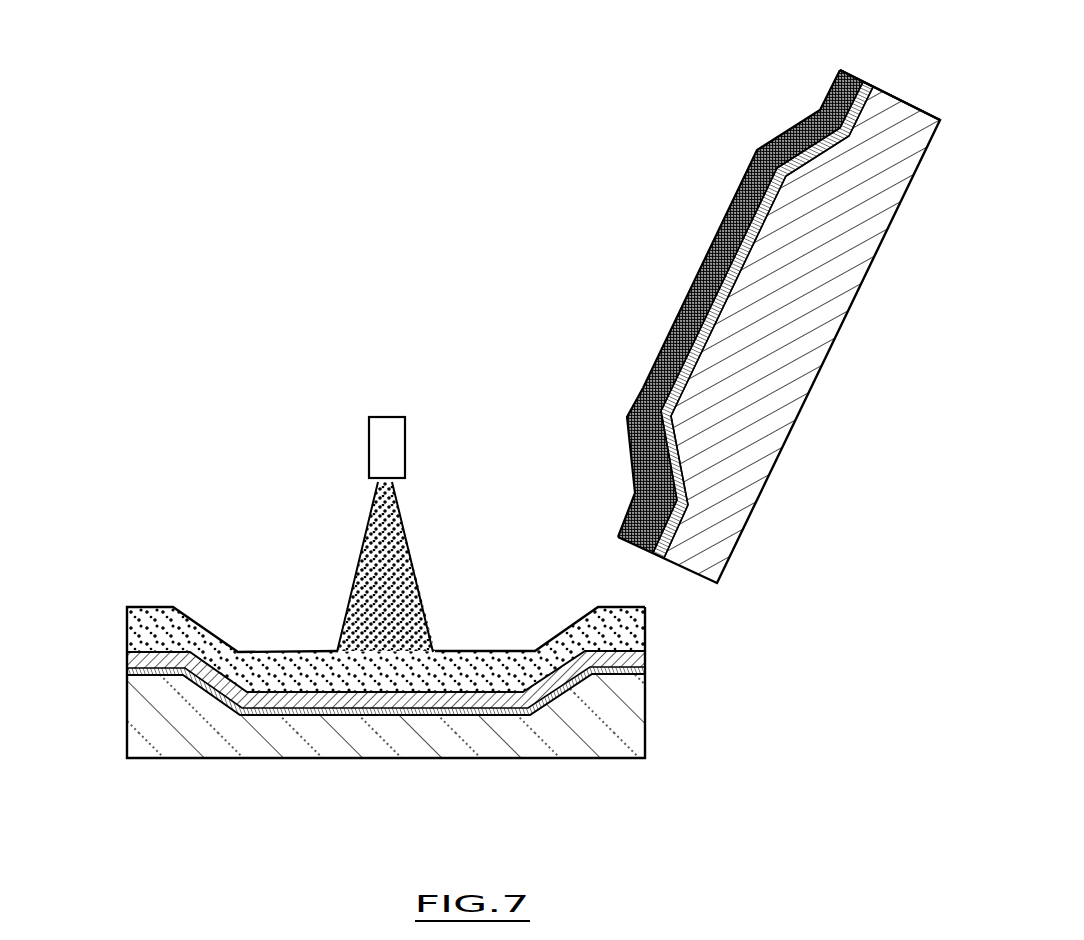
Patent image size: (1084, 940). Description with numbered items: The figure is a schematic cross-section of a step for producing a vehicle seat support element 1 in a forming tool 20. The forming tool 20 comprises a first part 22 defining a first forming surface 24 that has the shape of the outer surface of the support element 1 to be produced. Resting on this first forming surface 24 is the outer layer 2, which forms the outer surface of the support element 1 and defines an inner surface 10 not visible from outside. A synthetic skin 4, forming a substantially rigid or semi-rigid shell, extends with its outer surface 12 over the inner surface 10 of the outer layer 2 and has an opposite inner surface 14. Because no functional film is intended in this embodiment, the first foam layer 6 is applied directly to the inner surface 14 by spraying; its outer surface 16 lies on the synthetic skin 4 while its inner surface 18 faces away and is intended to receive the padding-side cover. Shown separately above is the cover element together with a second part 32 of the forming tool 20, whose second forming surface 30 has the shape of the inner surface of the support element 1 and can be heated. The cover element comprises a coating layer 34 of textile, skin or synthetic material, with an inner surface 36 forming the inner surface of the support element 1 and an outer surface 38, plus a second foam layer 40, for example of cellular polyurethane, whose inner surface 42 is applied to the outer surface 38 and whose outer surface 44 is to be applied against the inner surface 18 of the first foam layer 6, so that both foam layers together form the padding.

The vehicle seat support element 1 is at (707, 272).
The outer layer 2 is at (283, 700).
The synthetic skin 4 is at (265, 712).
The first foam layer 6 is at (257, 655).
The inner surface 10 is at (622, 650).
The outer surface 12 is at (560, 683).
The inner surface 14 is at (527, 668).
The outer surface 16 is at (312, 690).
The inner surface 18 is at (453, 652).
The forming tool 20 is at (147, 516).
The first part 22 is at (127, 702).
The first forming surface 24 is at (200, 690).
The second forming surface 30 is at (732, 283).
The second part 32 is at (827, 257).
The coating layer 34 is at (873, 83).
The inner surface 36 is at (778, 197).
The outer surface 38 is at (747, 172).
The second foam layer 40 is at (643, 388).
The inner surface 42 is at (693, 368).
The outer surface 44 is at (660, 334).